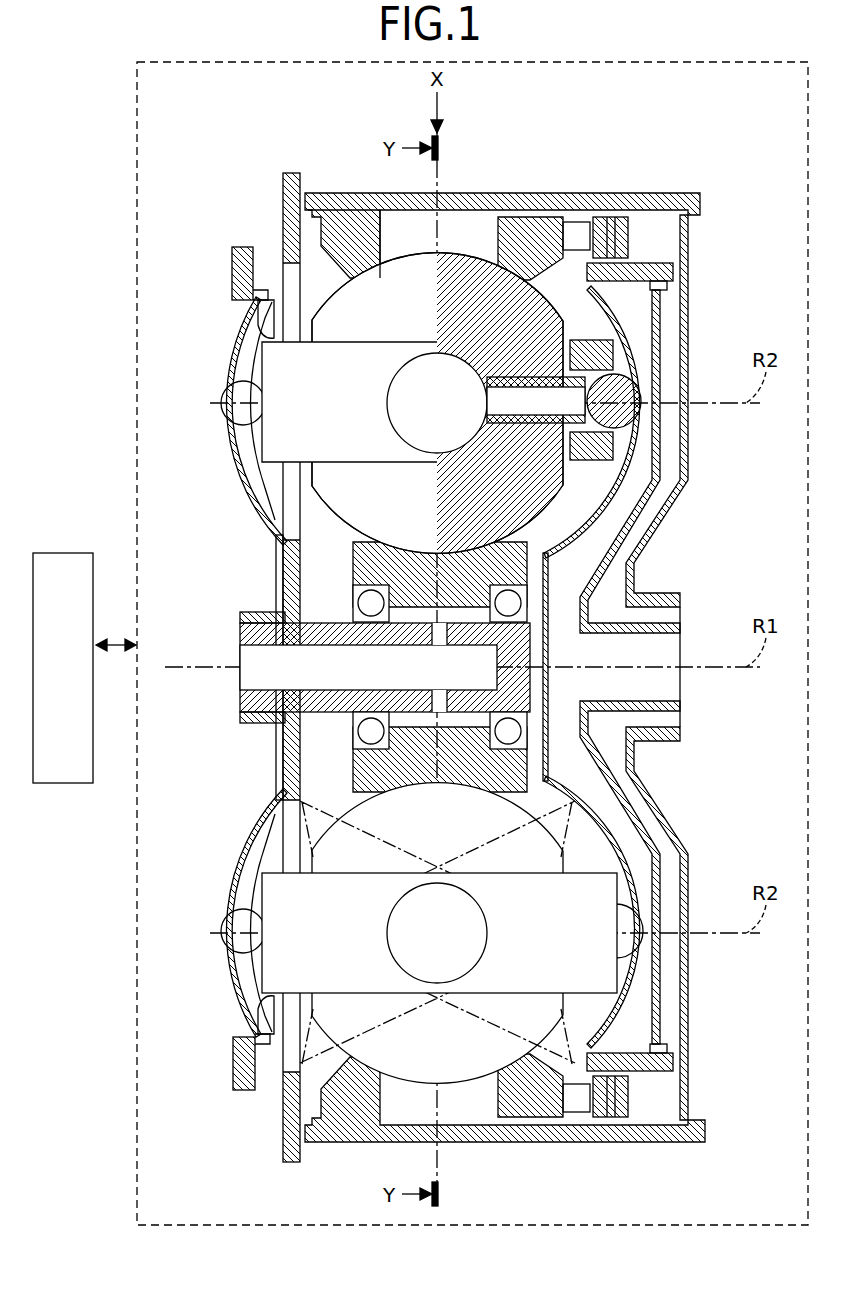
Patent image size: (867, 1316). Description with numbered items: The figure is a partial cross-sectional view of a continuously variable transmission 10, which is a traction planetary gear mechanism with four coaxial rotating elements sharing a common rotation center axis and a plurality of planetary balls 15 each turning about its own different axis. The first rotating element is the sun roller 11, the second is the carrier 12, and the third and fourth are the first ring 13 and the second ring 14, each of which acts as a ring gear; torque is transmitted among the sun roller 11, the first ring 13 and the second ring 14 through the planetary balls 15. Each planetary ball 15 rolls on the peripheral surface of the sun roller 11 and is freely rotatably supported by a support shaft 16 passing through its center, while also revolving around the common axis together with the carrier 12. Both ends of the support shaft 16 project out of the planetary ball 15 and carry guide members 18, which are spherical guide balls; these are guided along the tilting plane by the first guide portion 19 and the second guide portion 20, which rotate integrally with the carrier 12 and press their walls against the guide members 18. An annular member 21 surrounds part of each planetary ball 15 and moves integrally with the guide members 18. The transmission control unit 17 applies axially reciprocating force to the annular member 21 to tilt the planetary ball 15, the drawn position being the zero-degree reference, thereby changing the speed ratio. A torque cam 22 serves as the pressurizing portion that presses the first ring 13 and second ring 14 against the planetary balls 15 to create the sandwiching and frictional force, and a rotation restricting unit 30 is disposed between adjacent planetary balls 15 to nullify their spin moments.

The continuously variable transmission 10 is at (664, 62).
The sun roller 11 is at (352, 568).
The carrier 12 is at (283, 205).
The first ring 13 is at (500, 229).
The second ring 14 is at (347, 193).
The planetary ball 15 is at (395, 252).
The support shaft 16 is at (573, 474).
The transmission control unit 17 is at (68, 553).
The guide member 18 is at (240, 378).
The first guide portion 19 is at (660, 432).
The second guide portion 20 is at (245, 447).
The annular member 21 is at (270, 328).
The torque cam 22 is at (578, 222).
The rotation restricting unit 30 is at (400, 357).